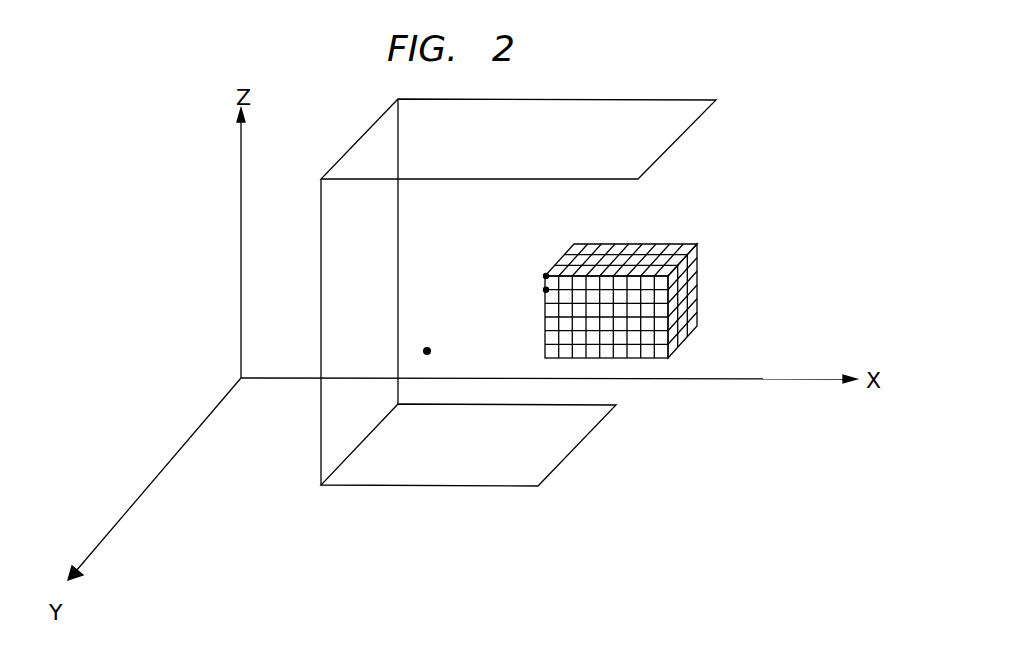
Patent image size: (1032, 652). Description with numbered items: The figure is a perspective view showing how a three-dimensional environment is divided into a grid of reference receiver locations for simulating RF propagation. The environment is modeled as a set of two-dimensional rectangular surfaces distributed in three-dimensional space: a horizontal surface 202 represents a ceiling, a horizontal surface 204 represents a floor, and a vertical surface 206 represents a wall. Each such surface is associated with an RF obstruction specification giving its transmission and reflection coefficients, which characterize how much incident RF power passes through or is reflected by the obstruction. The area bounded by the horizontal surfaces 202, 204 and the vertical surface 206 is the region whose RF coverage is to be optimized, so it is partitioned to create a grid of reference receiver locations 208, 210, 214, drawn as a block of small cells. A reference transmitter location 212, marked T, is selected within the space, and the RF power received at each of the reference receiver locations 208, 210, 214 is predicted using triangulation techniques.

The horizontal surface 202 is at (666, 135).
The horizontal surface 204 is at (557, 448).
The vertical surface 206 is at (386, 289).
The reference receiver location 208 is at (546, 276).
The reference receiver location 210 is at (546, 290).
The reference transmitter location 212 is at (427, 347).
The reference receiver location 214 is at (559, 276).